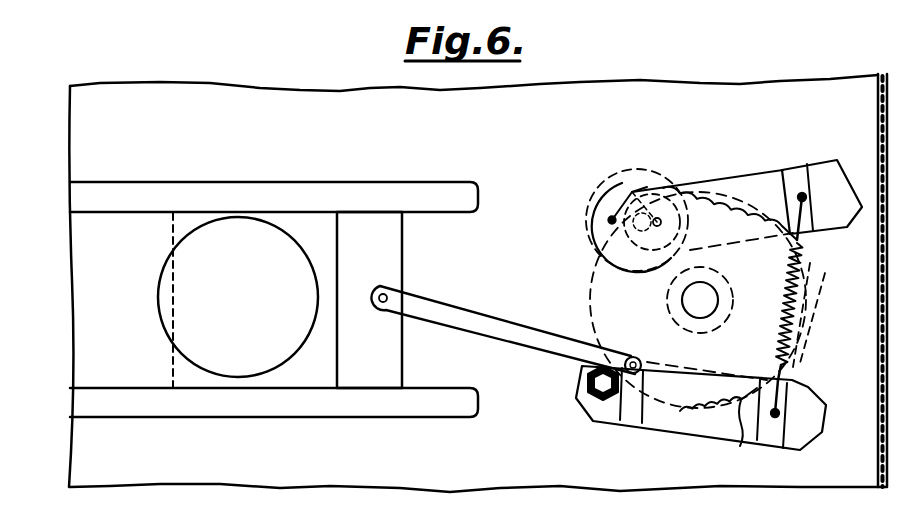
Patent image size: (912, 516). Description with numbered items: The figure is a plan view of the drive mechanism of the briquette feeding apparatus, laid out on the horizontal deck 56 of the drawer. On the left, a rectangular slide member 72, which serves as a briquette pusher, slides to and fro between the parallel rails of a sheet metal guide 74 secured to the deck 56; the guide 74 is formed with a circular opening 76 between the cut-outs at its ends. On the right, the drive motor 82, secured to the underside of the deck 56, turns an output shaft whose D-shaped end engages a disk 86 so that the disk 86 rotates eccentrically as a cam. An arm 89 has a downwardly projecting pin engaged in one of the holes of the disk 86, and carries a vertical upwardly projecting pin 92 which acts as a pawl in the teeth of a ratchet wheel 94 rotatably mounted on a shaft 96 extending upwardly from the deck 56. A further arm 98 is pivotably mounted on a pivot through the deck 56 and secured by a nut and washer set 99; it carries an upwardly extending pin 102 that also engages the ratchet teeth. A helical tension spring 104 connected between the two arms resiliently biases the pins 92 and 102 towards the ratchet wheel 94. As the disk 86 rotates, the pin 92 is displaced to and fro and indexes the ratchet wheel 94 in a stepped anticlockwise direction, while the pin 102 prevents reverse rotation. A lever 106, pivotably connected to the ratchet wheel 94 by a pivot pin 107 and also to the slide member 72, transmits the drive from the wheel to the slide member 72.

The deck 56 is at (345, 98).
The sheet metal guide 74 is at (147, 225).
The slide member 72 is at (385, 240).
The circular opening 76 is at (165, 317).
The lever 106 is at (497, 337).
The pivot pin 107 is at (637, 353).
The disk 86 is at (617, 183).
The drive motor 82 is at (606, 224).
The arm 89 is at (753, 180).
The pin 92 is at (777, 230).
The helical tension spring 104 is at (819, 284).
The ratchet wheel 94 is at (592, 266).
The shaft 96 is at (703, 298).
The further arm 98 is at (680, 426).
The nut and washer set 99 is at (590, 400).
The pin 102 is at (740, 446).